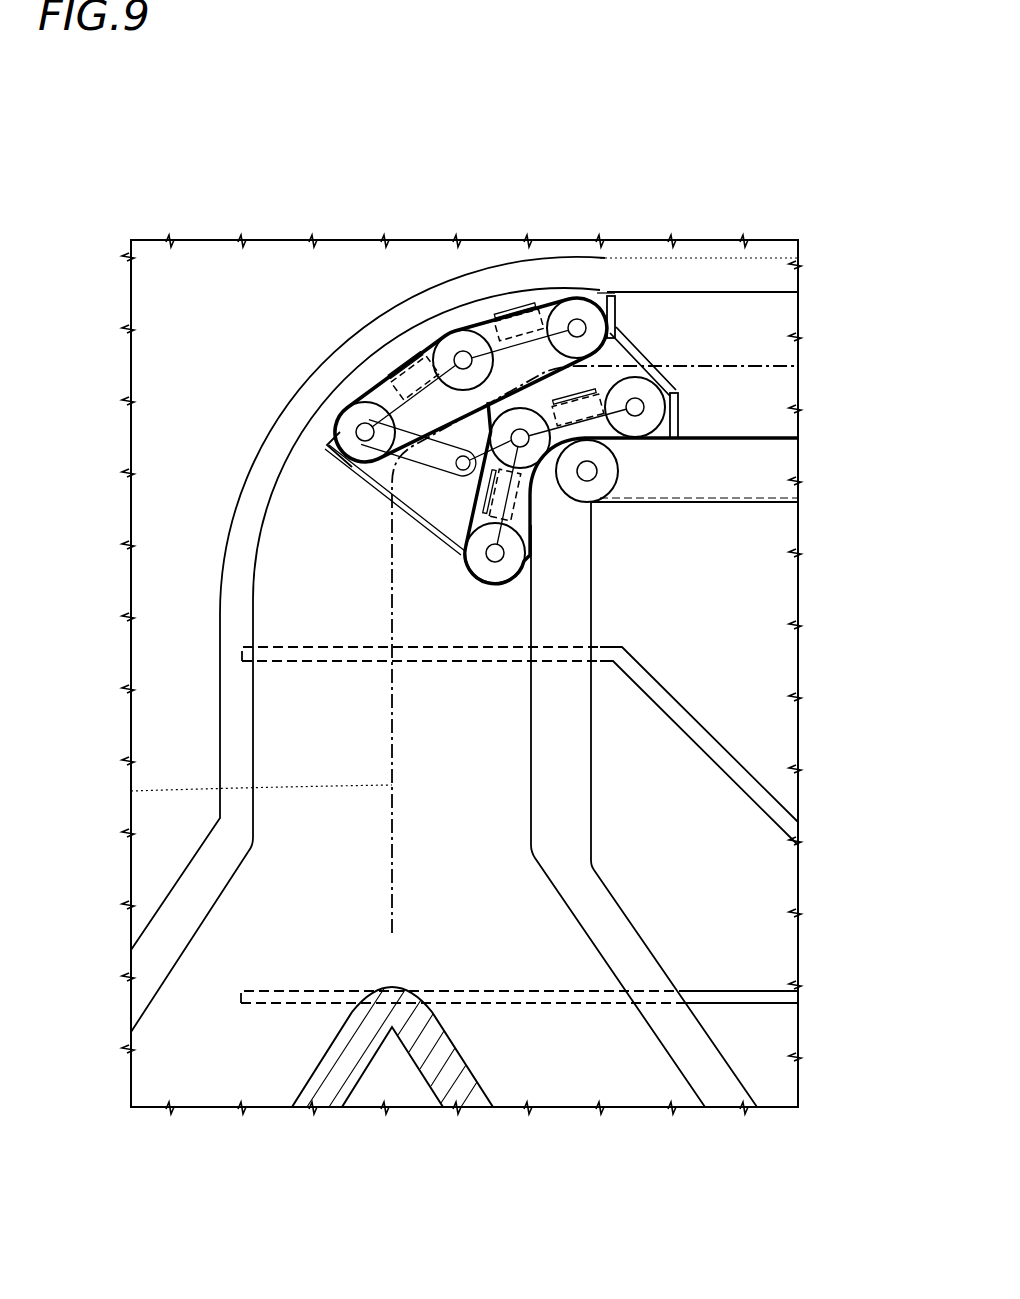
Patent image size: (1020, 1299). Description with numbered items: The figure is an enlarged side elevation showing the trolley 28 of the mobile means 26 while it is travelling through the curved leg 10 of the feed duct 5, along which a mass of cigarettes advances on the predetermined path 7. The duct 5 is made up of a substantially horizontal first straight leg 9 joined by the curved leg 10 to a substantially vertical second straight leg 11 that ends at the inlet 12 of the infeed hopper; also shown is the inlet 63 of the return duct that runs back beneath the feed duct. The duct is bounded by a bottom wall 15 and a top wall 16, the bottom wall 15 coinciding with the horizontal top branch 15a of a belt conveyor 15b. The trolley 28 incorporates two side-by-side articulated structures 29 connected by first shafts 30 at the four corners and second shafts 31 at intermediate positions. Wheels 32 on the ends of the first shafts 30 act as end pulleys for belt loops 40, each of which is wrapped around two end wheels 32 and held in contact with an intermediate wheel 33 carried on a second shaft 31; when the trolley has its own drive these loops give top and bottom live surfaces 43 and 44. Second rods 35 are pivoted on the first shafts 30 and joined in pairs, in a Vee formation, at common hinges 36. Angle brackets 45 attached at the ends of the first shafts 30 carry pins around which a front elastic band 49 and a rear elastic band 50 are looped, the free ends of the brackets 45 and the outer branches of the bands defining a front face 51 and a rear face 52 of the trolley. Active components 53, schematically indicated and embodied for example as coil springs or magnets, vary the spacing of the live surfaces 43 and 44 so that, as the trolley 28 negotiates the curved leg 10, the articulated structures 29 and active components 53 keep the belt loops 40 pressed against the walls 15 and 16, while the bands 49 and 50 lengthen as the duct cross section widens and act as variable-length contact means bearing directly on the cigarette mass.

The feed duct 5 is at (775, 376).
The predetermined path 7 is at (131, 791).
The first straight leg 9 is at (789, 252).
The curved leg 10 is at (303, 403).
The second straight leg 11 is at (216, 693).
The inlet 12 is at (305, 945).
The bottom wall 15 is at (529, 750).
The horizontal top branch 15a is at (744, 437).
The belt conveyor 15b is at (778, 506).
The top wall 16 is at (563, 390).
The mobile means 26 is at (647, 343).
The trolley 28 is at (398, 528).
The articulated structures 29 is at (492, 330).
The first shafts 30 is at (358, 424).
The second shafts 31 is at (445, 338).
The wheels 32 is at (632, 330).
The wheels 33 is at (465, 352).
The second rods 35 is at (570, 255).
The common hinges 36 is at (460, 471).
The belt loops 40 is at (405, 378).
The top live surface 43 is at (347, 405).
The bottom live surface 44 is at (533, 546).
The angle brackets 45 is at (612, 293).
The elastic band 49 is at (357, 477).
The elastic band 50 is at (669, 382).
The front face 51 is at (403, 523).
The rear face 52 is at (654, 360).
The active components 53 is at (388, 380).
The inlet 63 is at (755, 762).